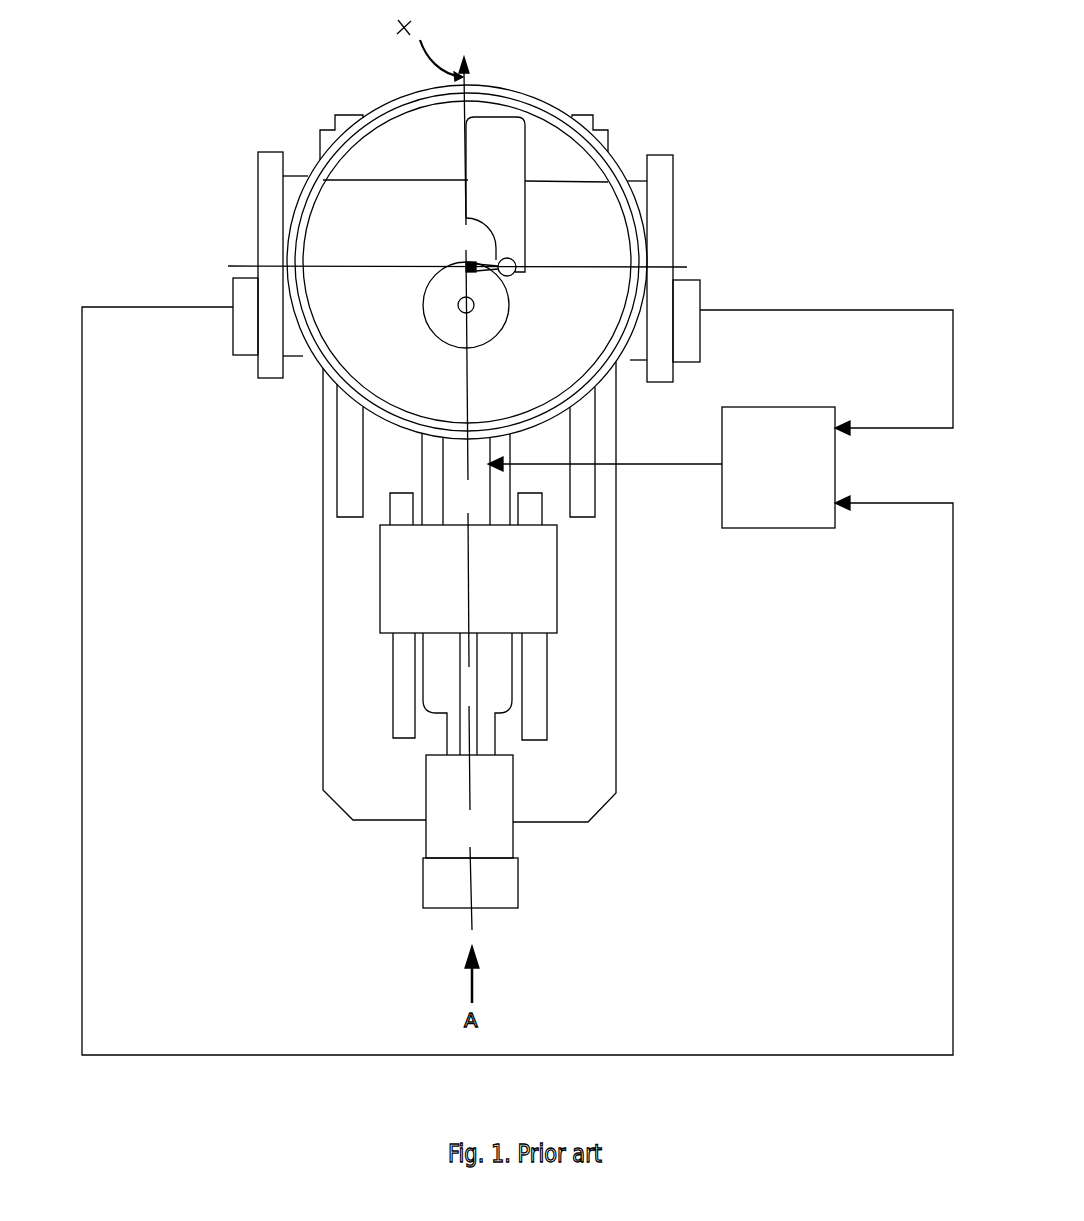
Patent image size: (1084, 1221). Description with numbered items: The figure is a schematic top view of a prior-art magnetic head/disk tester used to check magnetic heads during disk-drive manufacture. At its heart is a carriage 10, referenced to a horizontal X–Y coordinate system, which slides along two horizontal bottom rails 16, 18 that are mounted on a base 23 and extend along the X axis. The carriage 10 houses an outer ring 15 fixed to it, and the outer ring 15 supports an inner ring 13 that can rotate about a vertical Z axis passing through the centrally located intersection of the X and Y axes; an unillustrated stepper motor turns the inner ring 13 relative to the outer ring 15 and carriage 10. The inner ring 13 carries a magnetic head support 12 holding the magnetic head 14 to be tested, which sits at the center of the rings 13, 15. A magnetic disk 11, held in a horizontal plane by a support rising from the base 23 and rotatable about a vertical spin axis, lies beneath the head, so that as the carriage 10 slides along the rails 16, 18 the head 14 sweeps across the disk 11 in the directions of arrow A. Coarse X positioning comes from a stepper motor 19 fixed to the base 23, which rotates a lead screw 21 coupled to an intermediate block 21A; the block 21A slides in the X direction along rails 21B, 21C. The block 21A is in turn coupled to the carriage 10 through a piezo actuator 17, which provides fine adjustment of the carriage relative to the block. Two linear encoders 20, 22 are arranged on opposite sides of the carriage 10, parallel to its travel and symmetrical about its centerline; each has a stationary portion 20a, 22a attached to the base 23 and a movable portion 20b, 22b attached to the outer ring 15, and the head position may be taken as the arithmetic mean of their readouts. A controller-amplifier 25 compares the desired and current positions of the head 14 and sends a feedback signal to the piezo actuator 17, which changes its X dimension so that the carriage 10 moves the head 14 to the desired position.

The carriage 10 is at (637, 185).
The magnetic disk 11 is at (453, 322).
The magnetic head support 12 is at (502, 155).
The inner ring 13 is at (597, 378).
The magnetic head 14 is at (473, 262).
The outer ring 15 is at (385, 107).
The bottom rail 16 is at (575, 487).
The piezo actuator 17 is at (470, 490).
The bottom rail 18 is at (353, 493).
The stepper motor 19 is at (455, 882).
The linear encoder 20 is at (771, 238).
The stationary encoder portion 20a is at (688, 322).
The movable encoder portion 20b is at (660, 225).
The lead screw 21 is at (478, 670).
The intermediate block 21A is at (543, 583).
The rail 21B is at (402, 685).
The rail 21C is at (537, 723).
The linear encoder 22 is at (204, 229).
The stationary encoder portion 22a is at (247, 332).
The movable encoder portion 22b is at (272, 228).
The base 23 is at (557, 765).
The controller-amplifier 25 is at (785, 507).